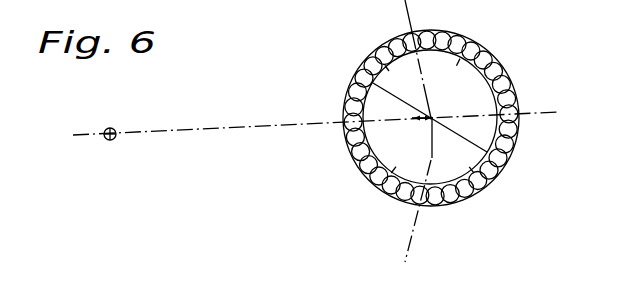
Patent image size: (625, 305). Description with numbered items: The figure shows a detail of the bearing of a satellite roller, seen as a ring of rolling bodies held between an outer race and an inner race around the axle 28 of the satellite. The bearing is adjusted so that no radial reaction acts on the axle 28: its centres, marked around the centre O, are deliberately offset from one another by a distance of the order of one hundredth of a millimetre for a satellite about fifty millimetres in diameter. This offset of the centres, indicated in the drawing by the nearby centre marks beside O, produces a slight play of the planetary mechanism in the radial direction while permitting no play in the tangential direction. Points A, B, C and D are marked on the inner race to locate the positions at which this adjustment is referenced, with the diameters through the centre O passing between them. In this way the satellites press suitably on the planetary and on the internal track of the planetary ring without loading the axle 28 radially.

The axle of the satellite 28 is at (463, 82).
The centre O is at (429, 127).
The point A on inner race A is at (452, 66).
The point B on inner race B is at (464, 164).
The point C on inner race C is at (393, 72).
The point D on inner race D is at (401, 167).